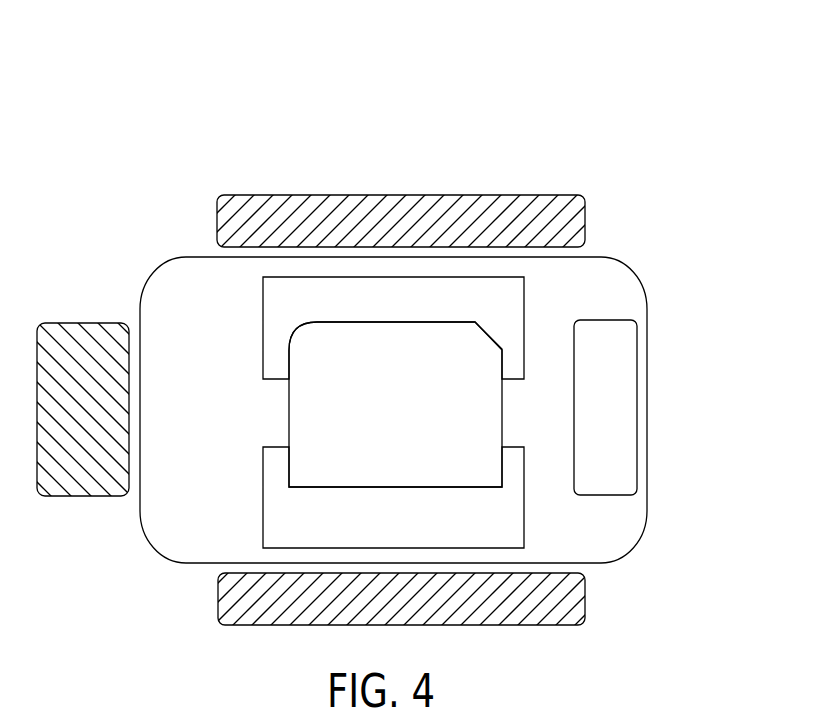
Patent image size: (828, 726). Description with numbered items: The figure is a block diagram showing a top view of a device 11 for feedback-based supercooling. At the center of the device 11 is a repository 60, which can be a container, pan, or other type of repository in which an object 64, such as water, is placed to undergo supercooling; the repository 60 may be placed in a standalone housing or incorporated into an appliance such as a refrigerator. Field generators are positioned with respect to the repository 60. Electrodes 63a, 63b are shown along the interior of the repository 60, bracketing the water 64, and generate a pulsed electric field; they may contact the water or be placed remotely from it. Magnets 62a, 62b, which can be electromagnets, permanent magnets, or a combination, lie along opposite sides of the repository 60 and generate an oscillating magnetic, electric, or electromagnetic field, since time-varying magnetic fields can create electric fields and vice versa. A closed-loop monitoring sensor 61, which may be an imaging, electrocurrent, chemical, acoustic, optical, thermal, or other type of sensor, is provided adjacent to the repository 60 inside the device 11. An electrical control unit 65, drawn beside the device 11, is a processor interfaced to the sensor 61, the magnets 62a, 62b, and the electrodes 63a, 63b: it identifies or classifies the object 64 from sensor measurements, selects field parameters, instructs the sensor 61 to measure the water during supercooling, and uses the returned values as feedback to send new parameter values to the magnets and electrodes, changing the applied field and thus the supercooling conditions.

The device for feedback-based supercooling 11 is at (110, 110).
The repository 60 is at (647, 468).
The closed-loop monitoring sensor 61 is at (632, 405).
The magnet 62a is at (395, 195).
The magnet 62b is at (218, 600).
The electrode 63a is at (263, 326).
The electrode 63b is at (263, 497).
The object 64 is at (288, 418).
The electrical control unit 65 is at (83, 322).